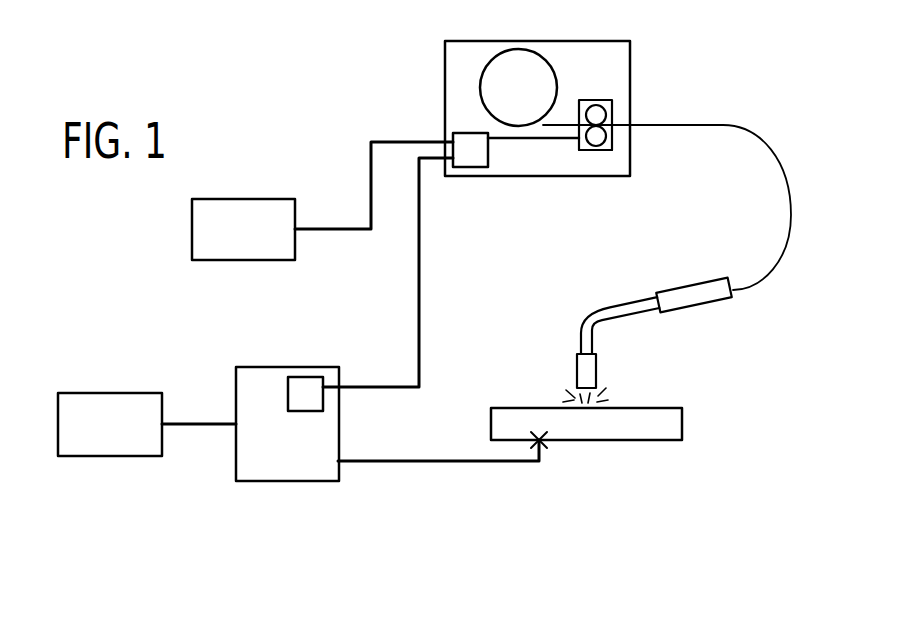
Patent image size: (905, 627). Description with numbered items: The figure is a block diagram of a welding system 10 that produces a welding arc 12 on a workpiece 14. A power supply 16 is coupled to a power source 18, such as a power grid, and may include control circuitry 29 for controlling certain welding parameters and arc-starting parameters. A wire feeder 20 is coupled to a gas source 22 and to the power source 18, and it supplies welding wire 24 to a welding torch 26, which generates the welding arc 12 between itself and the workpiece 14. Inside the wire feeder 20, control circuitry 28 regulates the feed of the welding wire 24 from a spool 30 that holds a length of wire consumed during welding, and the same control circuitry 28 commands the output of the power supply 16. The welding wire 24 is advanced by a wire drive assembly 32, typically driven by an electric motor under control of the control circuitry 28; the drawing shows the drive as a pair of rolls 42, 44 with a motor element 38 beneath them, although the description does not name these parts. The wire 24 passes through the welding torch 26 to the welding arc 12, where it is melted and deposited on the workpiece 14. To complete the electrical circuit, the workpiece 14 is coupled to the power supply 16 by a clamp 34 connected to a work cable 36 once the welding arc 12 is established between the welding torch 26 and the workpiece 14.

The welding system 10 is at (731, 50).
The welding arc 12 is at (575, 390).
The workpiece 14 is at (682, 423).
The power supply 16 is at (289, 367).
The power source 18 is at (108, 393).
The wire feeder 20 is at (537, 41).
The gas source 22 is at (243, 199).
The welding wire 24 is at (622, 122).
The welding torch 26 is at (692, 285).
The control circuitry 28 is at (488, 153).
The control circuitry 29 is at (307, 376).
The spool 30 is at (493, 57).
The wire drive assembly 32 is at (601, 150).
The clamp 34 is at (543, 445).
The work cable 36 is at (440, 462).
The drive motor 38 is at (583, 152).
The drive roll 42 is at (592, 145).
The drive roll 44 is at (594, 106).